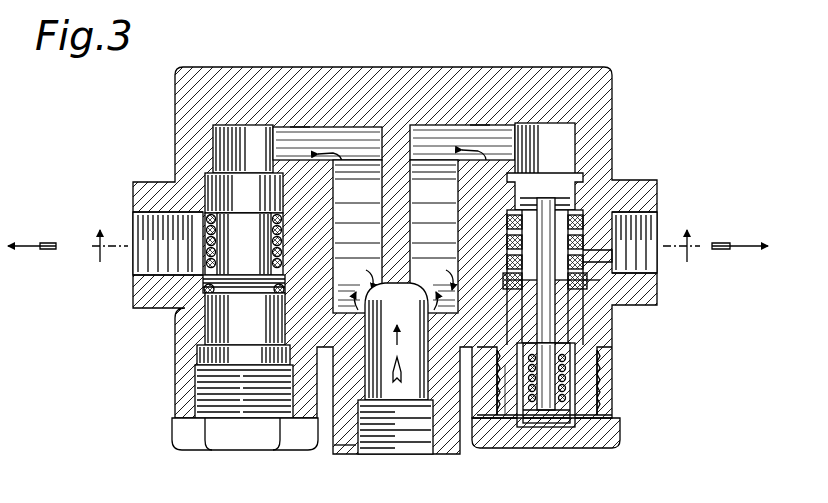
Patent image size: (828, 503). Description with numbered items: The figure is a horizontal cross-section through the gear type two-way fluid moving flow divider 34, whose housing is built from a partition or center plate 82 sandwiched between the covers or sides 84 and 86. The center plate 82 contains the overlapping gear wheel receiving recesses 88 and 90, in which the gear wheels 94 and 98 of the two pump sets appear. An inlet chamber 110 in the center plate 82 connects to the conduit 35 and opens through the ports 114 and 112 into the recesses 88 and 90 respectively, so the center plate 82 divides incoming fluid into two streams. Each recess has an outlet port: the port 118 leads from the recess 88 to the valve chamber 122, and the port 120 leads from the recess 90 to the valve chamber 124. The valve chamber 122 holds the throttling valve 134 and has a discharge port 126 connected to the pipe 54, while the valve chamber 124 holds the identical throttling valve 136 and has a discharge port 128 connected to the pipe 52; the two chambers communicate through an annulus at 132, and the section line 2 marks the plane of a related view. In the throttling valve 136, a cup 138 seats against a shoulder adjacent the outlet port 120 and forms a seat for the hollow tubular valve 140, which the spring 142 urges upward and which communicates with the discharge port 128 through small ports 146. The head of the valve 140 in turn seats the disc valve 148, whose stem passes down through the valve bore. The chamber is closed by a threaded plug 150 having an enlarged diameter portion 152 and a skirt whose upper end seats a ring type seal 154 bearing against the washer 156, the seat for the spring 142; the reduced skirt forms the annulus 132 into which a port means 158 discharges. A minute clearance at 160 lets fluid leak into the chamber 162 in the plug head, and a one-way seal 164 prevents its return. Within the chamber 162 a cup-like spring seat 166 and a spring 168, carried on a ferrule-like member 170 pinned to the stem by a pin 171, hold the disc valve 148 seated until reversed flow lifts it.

The flow divider 34 is at (396, 233).
The cover 86 is at (396, 260).
The cover 84 is at (186, 90).
The discharge port 126 is at (142, 258).
The valve chamber 122 is at (210, 143).
The throttling valve 134 is at (225, 195).
The annulus 132 is at (200, 352).
The port means 158 is at (245, 372).
The plug 150 is at (180, 430).
The gear wheel receiving recess 88 is at (367, 157).
The gear wheel receiving recess 90 is at (427, 158).
The outlet port 118 is at (298, 125).
The outlet port 120 is at (480, 125).
The gear wheel 94 is at (357, 236).
The gear wheel 98 is at (434, 236).
The port 114 is at (356, 282).
The port 112 is at (435, 282).
The inlet chamber 110 is at (396, 341).
The conduit 35 is at (376, 452).
The center plate 82 is at (340, 452).
The valve chamber 124 is at (565, 135).
The disc valve 148 is at (560, 185).
The cup 138 is at (590, 180).
The small ports 146 is at (612, 218).
The valve 140 is at (560, 205).
The discharge port 128 is at (645, 258).
The spring 142 is at (598, 258).
The washer 156 is at (590, 285).
The enlarged diameter portion 152 is at (578, 300).
The ring type seal 154 is at (590, 310).
The chamber 162 is at (565, 430).
The ferrule-like member 170 is at (556, 418).
The pin 171 is at (528, 412).
The clearance area 160 is at (590, 330).
The one-way seal 164 is at (590, 345).
The spring seat 166 is at (583, 385).
The spring 168 is at (597, 408).
The throttling valve 136 is at (604, 449).
The section line 2 is at (396, 232).
The pipe 54 is at (32, 236).
The pipe 52 is at (740, 236).